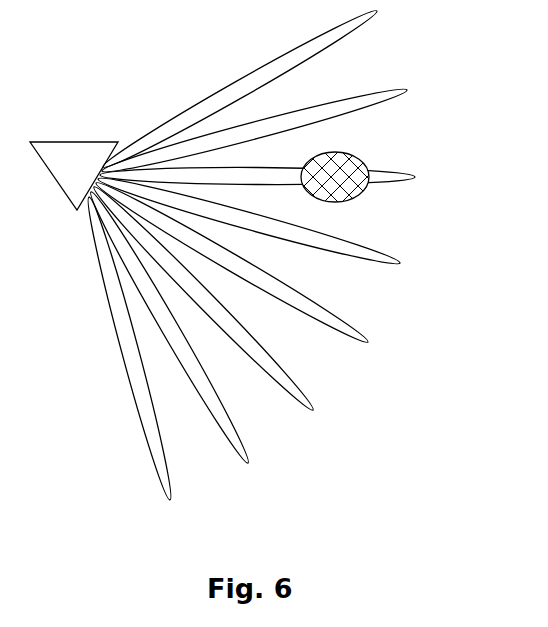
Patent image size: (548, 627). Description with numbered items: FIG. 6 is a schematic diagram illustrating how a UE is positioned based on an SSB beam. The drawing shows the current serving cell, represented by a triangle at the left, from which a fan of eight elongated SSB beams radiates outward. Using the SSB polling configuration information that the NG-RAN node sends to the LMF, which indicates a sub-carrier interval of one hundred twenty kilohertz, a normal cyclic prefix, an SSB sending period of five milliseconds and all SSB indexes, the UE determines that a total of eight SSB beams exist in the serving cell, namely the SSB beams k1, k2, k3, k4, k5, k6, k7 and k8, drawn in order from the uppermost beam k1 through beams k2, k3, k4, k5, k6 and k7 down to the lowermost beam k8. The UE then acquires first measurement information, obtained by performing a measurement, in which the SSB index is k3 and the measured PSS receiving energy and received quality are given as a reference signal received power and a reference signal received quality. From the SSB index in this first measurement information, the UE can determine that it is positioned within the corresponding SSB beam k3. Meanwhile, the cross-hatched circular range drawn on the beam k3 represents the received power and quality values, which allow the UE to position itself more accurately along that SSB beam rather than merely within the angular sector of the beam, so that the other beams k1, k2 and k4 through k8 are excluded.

The serving cell is at (74, 163).
The SSB beam k1 is at (252, 89).
The SSB beam k2 is at (270, 130).
The SSB beam k3 is at (270, 177).
The SSB beam k4 is at (264, 222).
The SSB beam k5 is at (244, 263).
The SSB beam k6 is at (216, 306).
The SSB beam k7 is at (184, 334).
The SSB beam k8 is at (134, 361).